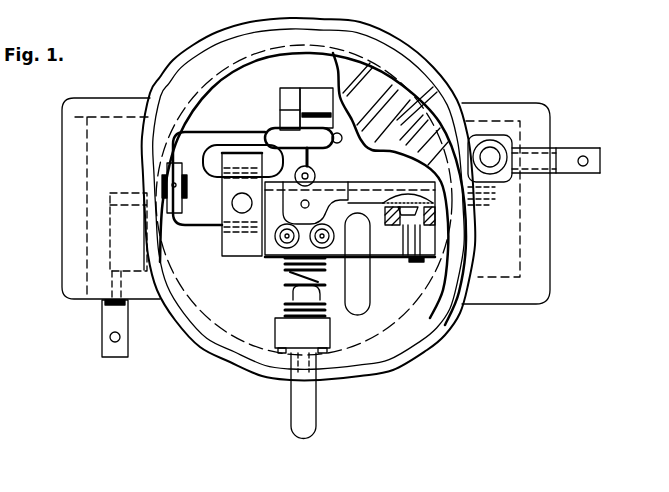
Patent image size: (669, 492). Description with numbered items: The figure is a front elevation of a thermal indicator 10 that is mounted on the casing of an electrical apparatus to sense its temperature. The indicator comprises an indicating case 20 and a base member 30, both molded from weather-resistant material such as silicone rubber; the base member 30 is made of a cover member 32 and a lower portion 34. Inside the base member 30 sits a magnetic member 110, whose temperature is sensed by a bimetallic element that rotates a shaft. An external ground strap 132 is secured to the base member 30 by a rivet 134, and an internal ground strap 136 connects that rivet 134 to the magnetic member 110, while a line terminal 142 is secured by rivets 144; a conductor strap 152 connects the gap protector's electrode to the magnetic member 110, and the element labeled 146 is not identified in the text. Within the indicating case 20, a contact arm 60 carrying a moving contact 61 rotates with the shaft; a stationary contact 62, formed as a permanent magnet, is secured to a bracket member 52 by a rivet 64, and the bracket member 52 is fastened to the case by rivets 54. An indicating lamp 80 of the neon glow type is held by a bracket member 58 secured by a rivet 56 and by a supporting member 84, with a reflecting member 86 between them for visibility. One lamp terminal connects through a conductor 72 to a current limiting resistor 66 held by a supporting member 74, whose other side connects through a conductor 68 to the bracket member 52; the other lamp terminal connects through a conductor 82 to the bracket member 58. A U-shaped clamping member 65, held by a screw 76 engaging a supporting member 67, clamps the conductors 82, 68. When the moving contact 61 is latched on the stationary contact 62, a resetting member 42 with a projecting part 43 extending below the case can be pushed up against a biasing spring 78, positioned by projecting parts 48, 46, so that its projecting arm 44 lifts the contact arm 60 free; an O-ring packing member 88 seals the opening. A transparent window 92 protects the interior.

The thermal indicator 10 is at (454, 364).
The indicating case 20 is at (216, 350).
The base member 30 is at (579, 274).
The cover member 32 is at (527, 105).
The lower portion 34 is at (534, 290).
The resetting member 42 is at (315, 344).
The projecting part 43 is at (291, 418).
The projecting arm 44 is at (370, 303).
The projecting part 46 is at (286, 303).
The projecting part 48 is at (284, 260).
The bracket member 52 is at (386, 259).
The rivets 54 is at (326, 230).
The rivet 56 is at (314, 175).
The bracket member 58 is at (323, 203).
The contact arm 60 is at (385, 195).
The moving contact 61 is at (397, 195).
The stationary contact 62 is at (434, 246).
The rivet 64 is at (416, 263).
The clamping member 65 is at (226, 257).
The current limiting resistor 66 is at (166, 165).
The supporting member 67 is at (232, 194).
The conductor 68 is at (163, 228).
The conductor 72 is at (210, 132).
The supporting member 74 is at (162, 184).
The screw 76 is at (240, 206).
The biasing spring 78 is at (287, 283).
The indicating lamp 80 is at (283, 128).
The conductor 82 is at (214, 172).
The supporting member 84 is at (303, 96).
The reflecting member 86 is at (313, 112).
The O-ring packing member 88 is at (322, 350).
The window 92 is at (407, 108).
The magnetic member 110 is at (489, 209).
The external ground strap 132 is at (104, 352).
The rivet 134 is at (103, 312).
The internal ground strap 136 is at (110, 219).
The line terminal 142 is at (601, 158).
The rivets 144 is at (564, 172).
The boss 146 is at (488, 136).
The conductor strap 152 is at (505, 190).